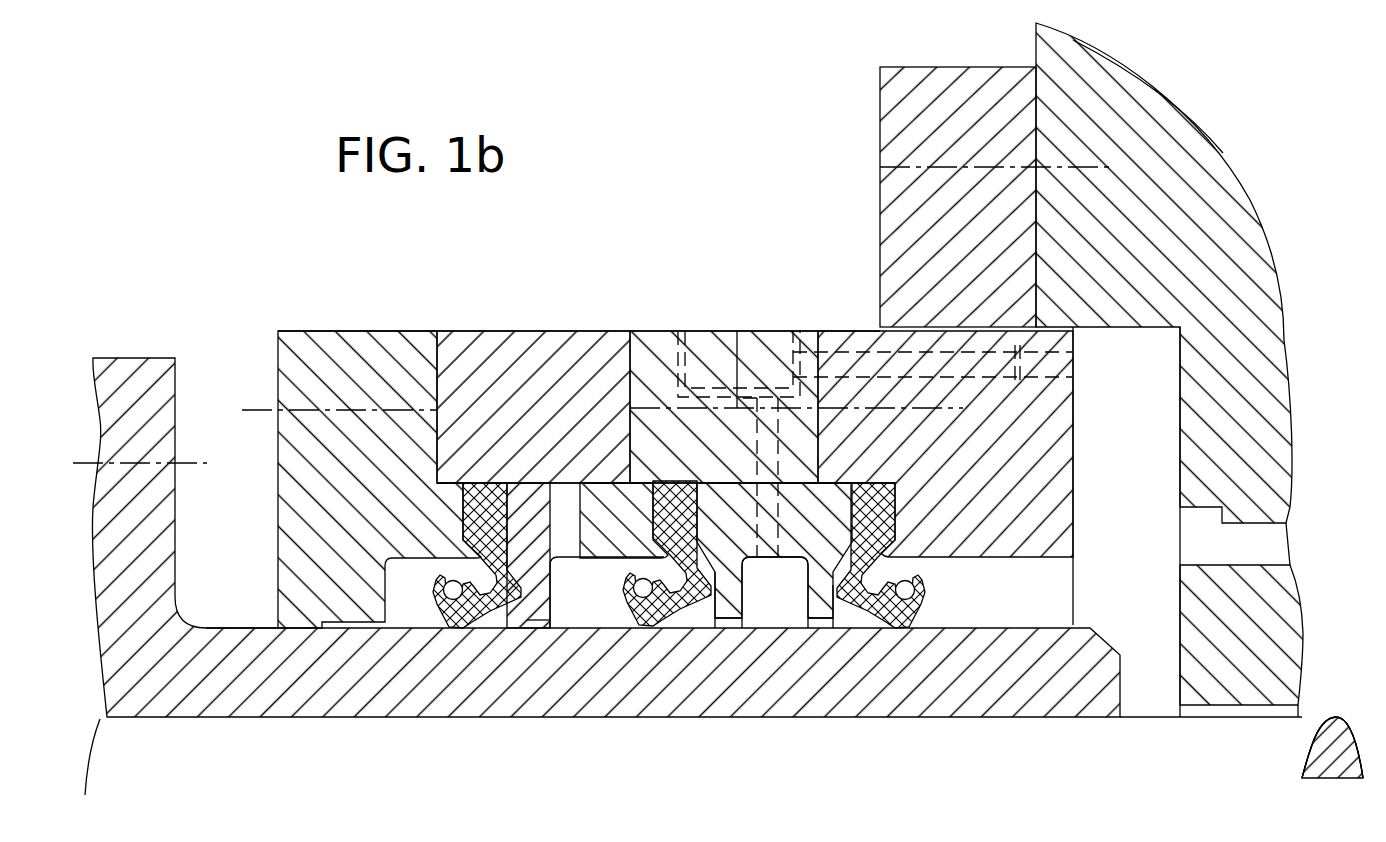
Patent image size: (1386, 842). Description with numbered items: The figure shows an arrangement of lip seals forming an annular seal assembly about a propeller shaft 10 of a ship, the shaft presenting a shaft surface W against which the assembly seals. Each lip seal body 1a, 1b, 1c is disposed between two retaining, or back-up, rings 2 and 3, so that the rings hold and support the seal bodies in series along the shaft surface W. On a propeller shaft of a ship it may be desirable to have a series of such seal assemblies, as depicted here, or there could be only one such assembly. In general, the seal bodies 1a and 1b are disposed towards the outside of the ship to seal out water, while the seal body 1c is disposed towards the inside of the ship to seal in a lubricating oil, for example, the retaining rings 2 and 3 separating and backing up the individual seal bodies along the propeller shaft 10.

The lip seal body 1a is at (458, 598).
The lip seal body 1b is at (647, 612).
The lip seal body 1c is at (898, 615).
The retaining ring 2 is at (432, 560).
The retaining ring 3 is at (540, 600).
The shaft surface W is at (245, 628).
The propeller shaft 10 is at (1300, 730).